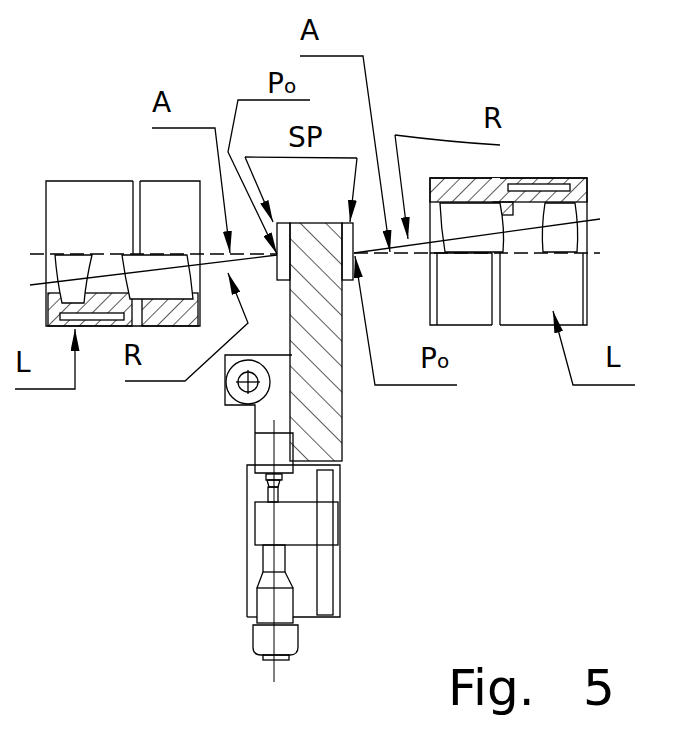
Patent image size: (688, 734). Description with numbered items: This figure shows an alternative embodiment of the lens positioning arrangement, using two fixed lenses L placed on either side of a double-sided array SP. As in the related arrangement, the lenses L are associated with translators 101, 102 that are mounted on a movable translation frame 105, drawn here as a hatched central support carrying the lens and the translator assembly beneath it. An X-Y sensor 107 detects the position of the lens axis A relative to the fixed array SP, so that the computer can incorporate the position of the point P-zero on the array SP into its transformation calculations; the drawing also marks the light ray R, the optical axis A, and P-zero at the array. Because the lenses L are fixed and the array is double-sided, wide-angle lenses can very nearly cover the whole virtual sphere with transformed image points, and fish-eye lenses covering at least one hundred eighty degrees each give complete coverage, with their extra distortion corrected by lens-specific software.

The translator 101 is at (195, 518).
The translator 102 is at (191, 602).
The translation frame 105 is at (376, 343).
The X-Y sensor 107 is at (362, 541).